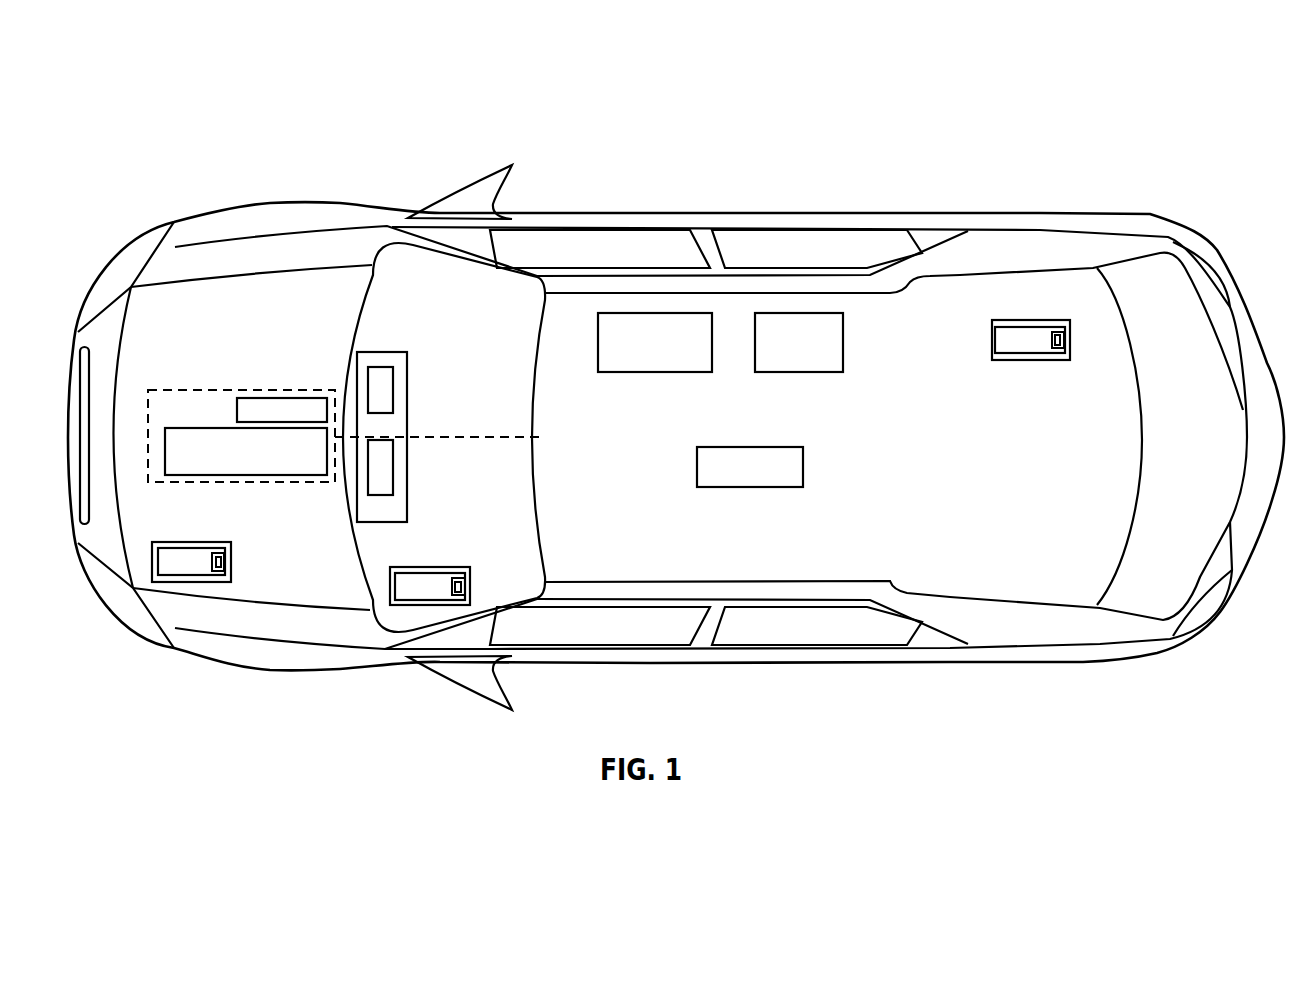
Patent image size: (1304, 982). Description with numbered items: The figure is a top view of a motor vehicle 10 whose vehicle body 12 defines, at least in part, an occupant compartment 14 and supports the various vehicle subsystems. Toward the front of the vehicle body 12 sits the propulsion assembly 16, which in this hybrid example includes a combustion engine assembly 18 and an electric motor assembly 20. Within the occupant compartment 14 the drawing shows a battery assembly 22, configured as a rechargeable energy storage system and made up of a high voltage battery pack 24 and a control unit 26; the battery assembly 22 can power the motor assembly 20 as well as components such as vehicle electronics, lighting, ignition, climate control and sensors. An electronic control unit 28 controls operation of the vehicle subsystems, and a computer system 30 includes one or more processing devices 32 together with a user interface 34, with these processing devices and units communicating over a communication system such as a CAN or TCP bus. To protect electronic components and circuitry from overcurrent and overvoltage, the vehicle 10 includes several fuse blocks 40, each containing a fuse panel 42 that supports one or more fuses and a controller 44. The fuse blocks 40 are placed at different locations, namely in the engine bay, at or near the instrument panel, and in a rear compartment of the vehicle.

The motor vehicle 10 is at (175, 124).
The vehicle body 12 is at (693, 207).
The occupant compartment 14 is at (822, 593).
The propulsion assembly 16 is at (187, 390).
The combustion engine assembly 18 is at (252, 475).
The electric motor assembly 20 is at (273, 398).
The battery assembly 22 is at (617, 389).
The high voltage battery pack 24 is at (685, 357).
The control unit 26 is at (800, 357).
The electronic control unit 28 is at (755, 468).
The computer system 30 is at (380, 340).
The processing device 32 is at (390, 463).
The user interface 34 is at (387, 385).
The fuse block 40 is at (193, 542).
The fuse panel 42 is at (203, 570).
The controller 44 is at (227, 558).